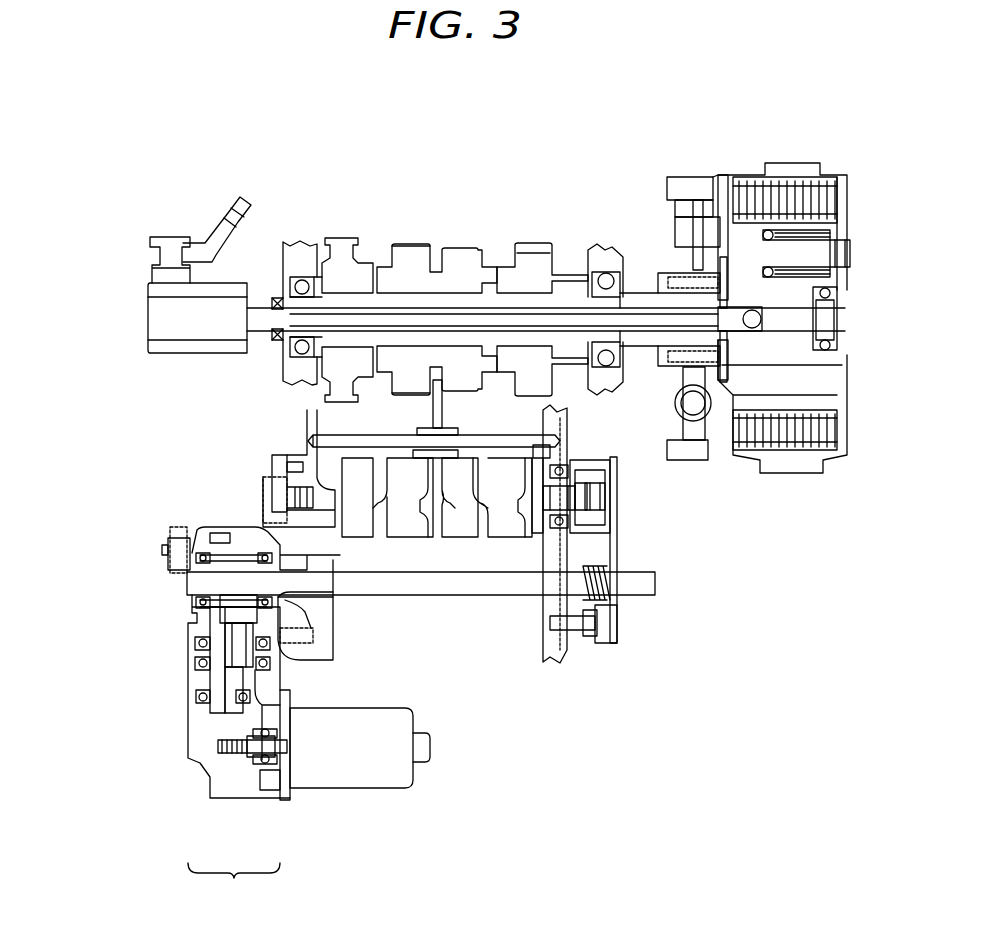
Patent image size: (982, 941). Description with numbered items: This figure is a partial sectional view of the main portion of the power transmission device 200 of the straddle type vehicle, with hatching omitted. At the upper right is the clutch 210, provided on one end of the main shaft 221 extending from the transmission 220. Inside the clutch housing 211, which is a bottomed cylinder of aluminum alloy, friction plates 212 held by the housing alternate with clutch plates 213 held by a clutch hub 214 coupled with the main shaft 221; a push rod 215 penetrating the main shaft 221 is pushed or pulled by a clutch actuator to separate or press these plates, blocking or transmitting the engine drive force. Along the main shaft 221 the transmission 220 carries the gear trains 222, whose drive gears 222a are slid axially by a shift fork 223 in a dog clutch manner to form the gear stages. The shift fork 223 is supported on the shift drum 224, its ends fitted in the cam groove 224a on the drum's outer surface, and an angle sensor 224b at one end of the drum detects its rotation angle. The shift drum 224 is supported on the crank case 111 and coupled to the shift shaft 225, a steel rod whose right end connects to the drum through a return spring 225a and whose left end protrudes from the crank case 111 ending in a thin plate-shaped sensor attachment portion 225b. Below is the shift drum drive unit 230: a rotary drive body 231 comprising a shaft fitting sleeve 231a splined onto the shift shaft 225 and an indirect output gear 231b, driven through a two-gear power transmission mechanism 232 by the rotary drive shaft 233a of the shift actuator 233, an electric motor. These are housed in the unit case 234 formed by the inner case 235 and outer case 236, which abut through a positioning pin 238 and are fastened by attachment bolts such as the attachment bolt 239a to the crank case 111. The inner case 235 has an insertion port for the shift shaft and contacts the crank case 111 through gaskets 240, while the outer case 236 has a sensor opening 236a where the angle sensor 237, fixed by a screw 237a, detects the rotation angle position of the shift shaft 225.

The drive unit 200 is at (210, 107).
The clutch 210 is at (714, 167).
The clutch housing 211 is at (793, 471).
The friction plates 212 is at (802, 183).
The clutch plates 213 is at (768, 187).
The clutch hub 214 is at (725, 190).
The push rod 215 is at (258, 347).
The transmission 220 is at (330, 227).
The main shaft 221 is at (531, 290).
The gear trains 222 is at (438, 283).
The drive gears 222a is at (418, 243).
The shift fork 223 is at (447, 404).
The shift drum 224 is at (434, 483).
The cam groove 224a is at (392, 457).
The angle sensor 224b is at (263, 490).
The shift shaft 225 is at (478, 597).
The return spring 225a is at (608, 641).
The sensor attachment portion 225b is at (175, 560).
The shift drum drive unit 230 is at (203, 783).
The rotary drive body 231 is at (138, 628).
The shaft fitting sleeve 231a is at (222, 607).
The indirect output gear 231b is at (222, 617).
The power transmission mechanism 232 is at (207, 683).
The shift actuator 233 is at (400, 790).
The rotary drive shaft 233a is at (227, 760).
The unit case 234 is at (234, 886).
The inner case 235 is at (255, 800).
The outer case 236 is at (215, 800).
The sensor opening 236a is at (197, 603).
The angle sensor 237 is at (162, 565).
The screw 237a is at (165, 552).
The positioning pin 238 is at (213, 530).
The attachment bolt 239a is at (297, 650).
The gaskets 240 is at (277, 558).
The crank case 111 is at (567, 425).